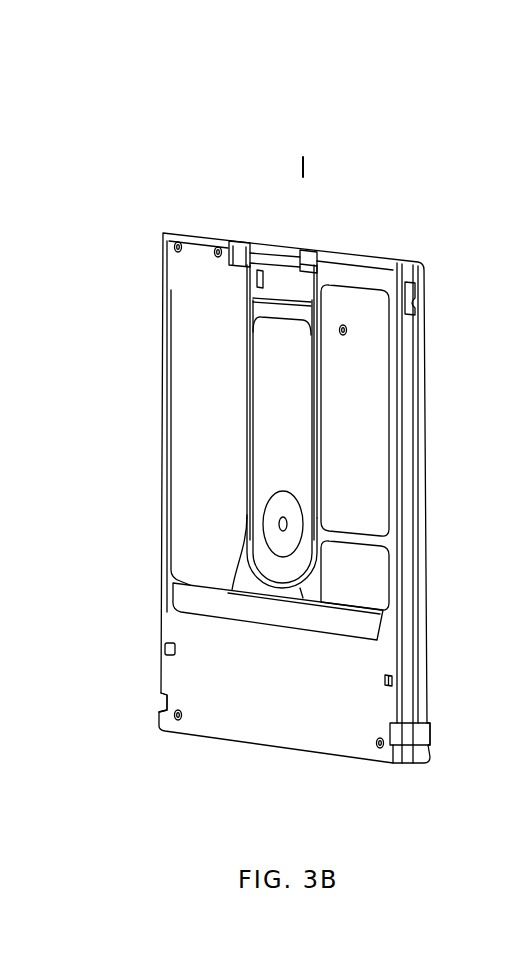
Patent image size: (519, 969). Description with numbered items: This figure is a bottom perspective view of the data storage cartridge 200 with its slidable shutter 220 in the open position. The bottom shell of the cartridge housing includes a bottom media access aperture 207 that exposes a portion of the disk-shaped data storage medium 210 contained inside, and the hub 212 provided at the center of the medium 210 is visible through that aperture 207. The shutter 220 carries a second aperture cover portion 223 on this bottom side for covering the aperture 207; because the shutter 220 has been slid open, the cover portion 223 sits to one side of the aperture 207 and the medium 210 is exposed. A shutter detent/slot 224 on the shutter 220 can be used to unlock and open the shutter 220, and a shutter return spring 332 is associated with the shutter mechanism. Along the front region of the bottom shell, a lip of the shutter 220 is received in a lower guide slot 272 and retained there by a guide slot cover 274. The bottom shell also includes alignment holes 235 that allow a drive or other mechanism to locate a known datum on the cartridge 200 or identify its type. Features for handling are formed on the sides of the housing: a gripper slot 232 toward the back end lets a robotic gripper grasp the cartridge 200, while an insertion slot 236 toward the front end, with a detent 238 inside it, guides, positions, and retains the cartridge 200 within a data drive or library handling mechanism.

The data storage cartridge 200 is at (304, 106).
The slidable shutter 220 is at (200, 240).
The shutter detent/slot 224 is at (235, 242).
The shutter return spring 332 is at (312, 250).
The bottom media access aperture 207 is at (247, 395).
The data storage medium 210 is at (301, 388).
The hub 212 is at (285, 491).
The second aperture cover portion 223 is at (227, 496).
The insertion slot 236 is at (420, 330).
The detent 238 is at (413, 300).
The guide slot cover 274 is at (303, 620).
The alignment holes 235 is at (177, 648).
The gripper slot 232 is at (162, 697).
The lower guide slot 272 is at (420, 731).